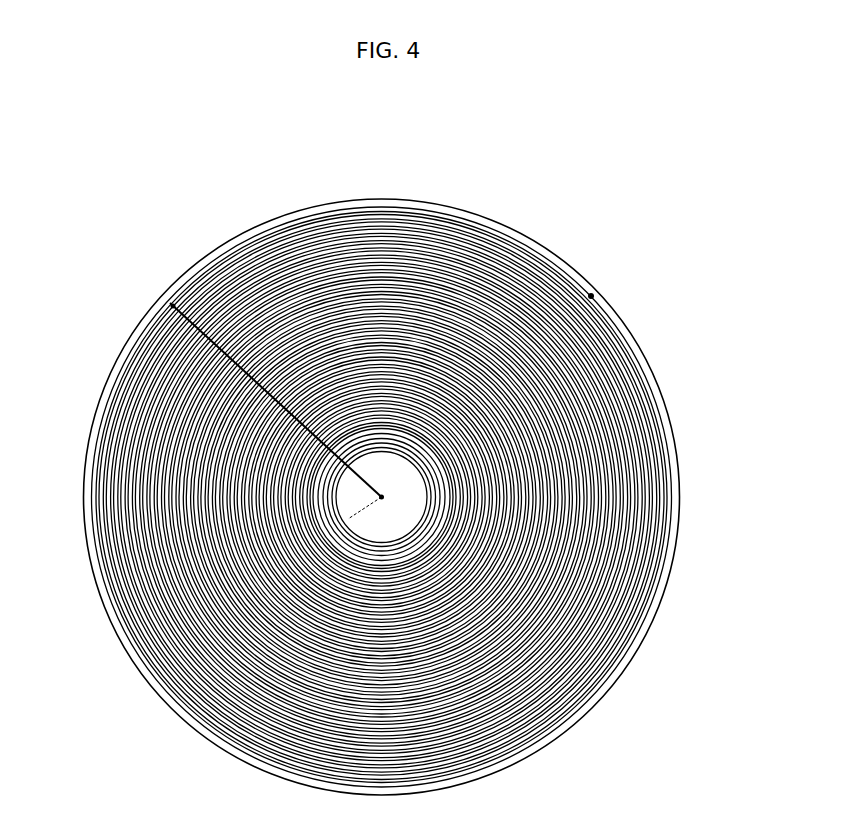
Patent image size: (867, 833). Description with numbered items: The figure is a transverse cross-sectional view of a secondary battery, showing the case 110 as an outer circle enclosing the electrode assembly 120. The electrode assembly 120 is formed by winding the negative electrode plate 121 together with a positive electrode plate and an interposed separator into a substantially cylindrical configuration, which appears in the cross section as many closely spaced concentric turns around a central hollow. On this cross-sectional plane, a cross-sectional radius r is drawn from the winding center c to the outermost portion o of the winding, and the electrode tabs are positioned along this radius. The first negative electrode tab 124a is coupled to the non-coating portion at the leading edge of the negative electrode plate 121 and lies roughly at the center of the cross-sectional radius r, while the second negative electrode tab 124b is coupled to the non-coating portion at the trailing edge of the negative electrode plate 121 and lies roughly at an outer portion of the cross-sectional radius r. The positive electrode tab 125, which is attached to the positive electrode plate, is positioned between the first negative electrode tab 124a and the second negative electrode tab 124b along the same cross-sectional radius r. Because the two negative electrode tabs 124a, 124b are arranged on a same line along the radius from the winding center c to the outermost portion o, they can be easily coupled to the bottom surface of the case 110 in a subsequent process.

The case 110 is at (675, 494).
The electrode assembly 120 is at (586, 285).
The negative electrode plate 121 is at (381, 442).
The first negative electrode tab 124a is at (263, 225).
The second negative electrode tab 124b is at (217, 133).
The positive electrode tab 125 is at (478, 212).
The outermost portion o is at (157, 290).
The cross-sectional radius r is at (97, 423).
The winding center c is at (124, 652).